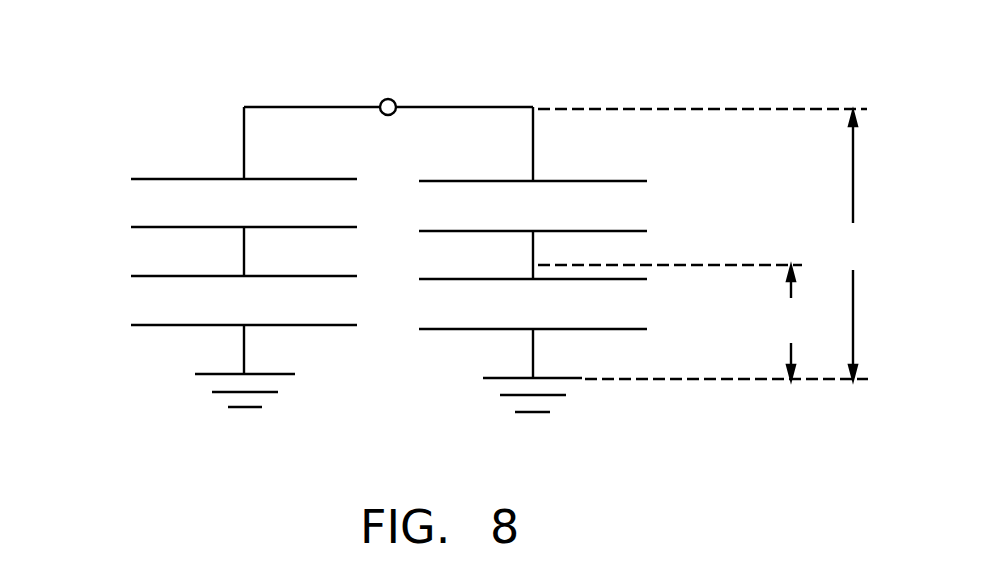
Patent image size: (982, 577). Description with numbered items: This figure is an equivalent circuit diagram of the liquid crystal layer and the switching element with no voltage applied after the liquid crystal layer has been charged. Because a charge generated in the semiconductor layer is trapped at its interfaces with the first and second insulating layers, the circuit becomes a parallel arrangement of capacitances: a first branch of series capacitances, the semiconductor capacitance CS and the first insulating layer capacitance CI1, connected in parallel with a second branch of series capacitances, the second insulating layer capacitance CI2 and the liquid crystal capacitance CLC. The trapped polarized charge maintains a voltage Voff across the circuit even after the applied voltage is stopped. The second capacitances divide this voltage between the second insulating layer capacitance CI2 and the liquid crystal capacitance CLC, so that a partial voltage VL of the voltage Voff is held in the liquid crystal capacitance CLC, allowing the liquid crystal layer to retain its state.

The semiconductor layer capacitance CS is at (214, 207).
The first insulating layer capacitance CI1 is at (214, 304).
The second insulating layer capacitance CI2 is at (560, 211).
The liquid crystal capacitance CLC is at (564, 308).
The maintained voltage Voff is at (854, 245).
The partial voltage VL is at (793, 323).